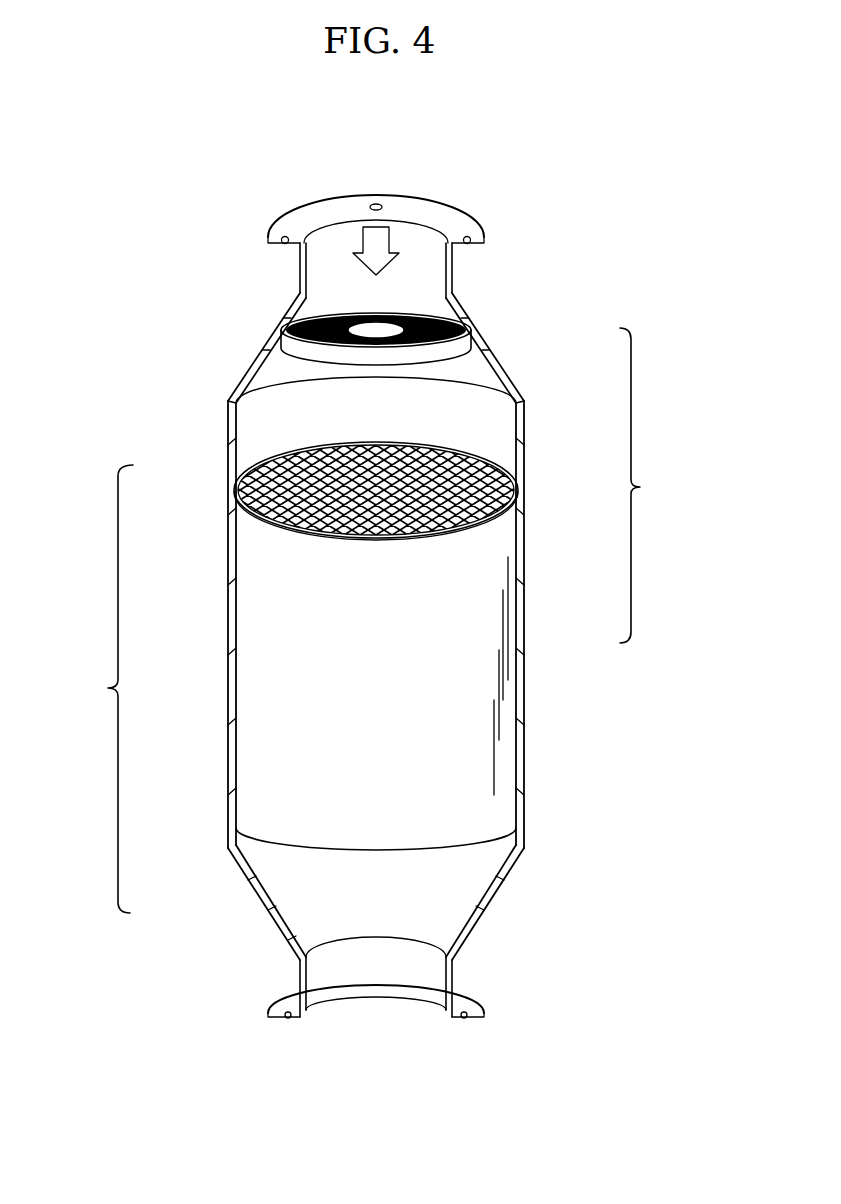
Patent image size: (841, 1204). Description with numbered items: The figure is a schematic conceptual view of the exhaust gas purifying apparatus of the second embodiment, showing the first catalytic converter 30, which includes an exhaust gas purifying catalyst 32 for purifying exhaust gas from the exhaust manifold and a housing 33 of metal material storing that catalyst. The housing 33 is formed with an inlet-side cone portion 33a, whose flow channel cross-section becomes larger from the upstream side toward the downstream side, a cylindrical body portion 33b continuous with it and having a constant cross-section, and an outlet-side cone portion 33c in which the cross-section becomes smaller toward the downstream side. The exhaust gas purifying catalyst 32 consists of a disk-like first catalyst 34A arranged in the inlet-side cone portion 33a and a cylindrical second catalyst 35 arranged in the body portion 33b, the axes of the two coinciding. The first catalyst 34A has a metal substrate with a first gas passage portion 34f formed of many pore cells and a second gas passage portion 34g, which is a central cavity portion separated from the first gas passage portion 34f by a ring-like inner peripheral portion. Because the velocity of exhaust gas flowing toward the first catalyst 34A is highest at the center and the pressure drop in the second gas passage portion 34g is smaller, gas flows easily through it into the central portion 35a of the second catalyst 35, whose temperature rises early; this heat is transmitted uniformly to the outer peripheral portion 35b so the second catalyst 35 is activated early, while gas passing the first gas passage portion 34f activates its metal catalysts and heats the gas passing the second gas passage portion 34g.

The first catalytic converter 30 is at (587, 261).
The exhaust gas purifying catalyst 32 is at (650, 485).
The housing 33 is at (299, 626).
The inlet-side cone portion 33a is at (236, 383).
The body portion 33b is at (232, 615).
The outlet-side cone portion 33c is at (257, 893).
The first catalyst 34A is at (447, 320).
The first gas passage portion 34f is at (447, 331).
The second gas passage portion 34g is at (390, 330).
The second catalyst 35 is at (419, 613).
The central portion 35a is at (388, 492).
The outer peripheral portion 35b is at (255, 507).